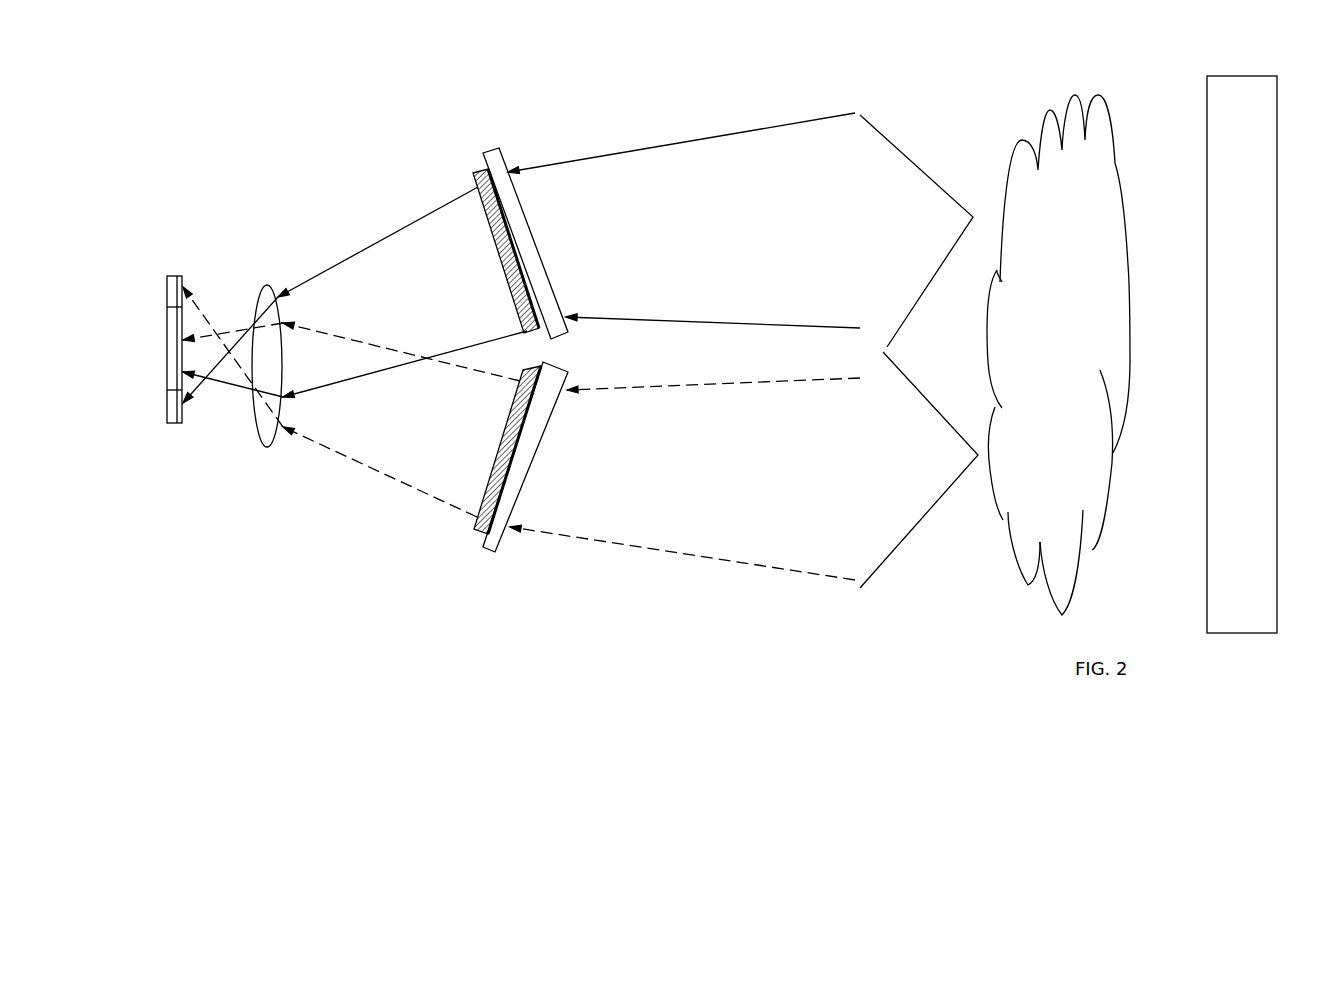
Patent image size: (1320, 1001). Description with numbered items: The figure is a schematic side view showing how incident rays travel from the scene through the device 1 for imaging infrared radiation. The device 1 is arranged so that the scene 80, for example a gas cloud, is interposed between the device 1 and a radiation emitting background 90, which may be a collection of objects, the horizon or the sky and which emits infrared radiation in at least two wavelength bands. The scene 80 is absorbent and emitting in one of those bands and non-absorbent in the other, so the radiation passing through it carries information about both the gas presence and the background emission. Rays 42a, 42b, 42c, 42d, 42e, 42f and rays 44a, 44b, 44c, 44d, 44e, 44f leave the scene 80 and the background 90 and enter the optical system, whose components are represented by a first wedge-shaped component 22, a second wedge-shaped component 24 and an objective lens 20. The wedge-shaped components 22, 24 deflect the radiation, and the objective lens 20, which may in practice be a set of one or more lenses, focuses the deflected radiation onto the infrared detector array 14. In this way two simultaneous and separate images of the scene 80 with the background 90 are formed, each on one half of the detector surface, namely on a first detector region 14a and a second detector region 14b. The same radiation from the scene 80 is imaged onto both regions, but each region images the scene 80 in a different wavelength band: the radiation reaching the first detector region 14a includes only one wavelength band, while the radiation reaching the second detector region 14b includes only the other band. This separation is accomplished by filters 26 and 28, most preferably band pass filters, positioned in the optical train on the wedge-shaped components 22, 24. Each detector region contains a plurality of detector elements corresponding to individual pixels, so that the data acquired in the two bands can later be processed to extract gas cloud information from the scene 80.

The device 1 is at (412, 90).
The infrared detector array 14 is at (177, 423).
The first detector region 14a is at (177, 390).
The second detector region 14b is at (177, 307).
The objective lens 20 is at (267, 447).
The first wedge-shaped component 22 is at (540, 229).
The second wedge-shaped component 24 is at (547, 448).
The filter 26 is at (497, 253).
The filter 28 is at (502, 452).
The incident ray 42a is at (690, 138).
The incident ray 42b is at (390, 230).
The incident ray 42c is at (193, 403).
The incident ray 42d is at (693, 320).
The incident ray 42e is at (463, 348).
The incident ray 42f is at (227, 378).
The incident ray 44a is at (678, 555).
The incident ray 44b is at (347, 455).
The incident ray 44c is at (194, 300).
The incident ray 44d is at (694, 386).
The incident ray 44e is at (467, 370).
The incident ray 44f is at (241, 330).
The scene 80 is at (1058, 465).
The radiation emitting background 90 is at (1254, 465).